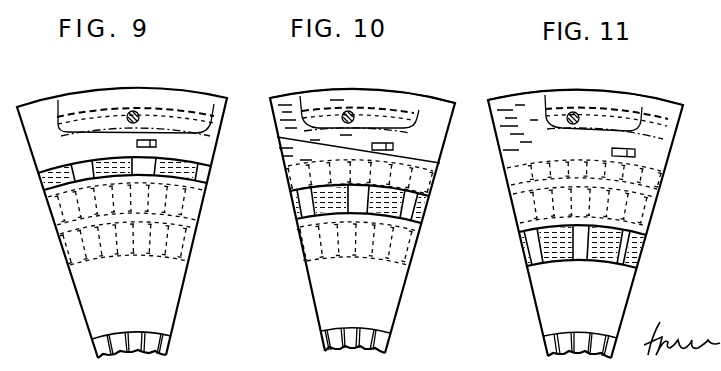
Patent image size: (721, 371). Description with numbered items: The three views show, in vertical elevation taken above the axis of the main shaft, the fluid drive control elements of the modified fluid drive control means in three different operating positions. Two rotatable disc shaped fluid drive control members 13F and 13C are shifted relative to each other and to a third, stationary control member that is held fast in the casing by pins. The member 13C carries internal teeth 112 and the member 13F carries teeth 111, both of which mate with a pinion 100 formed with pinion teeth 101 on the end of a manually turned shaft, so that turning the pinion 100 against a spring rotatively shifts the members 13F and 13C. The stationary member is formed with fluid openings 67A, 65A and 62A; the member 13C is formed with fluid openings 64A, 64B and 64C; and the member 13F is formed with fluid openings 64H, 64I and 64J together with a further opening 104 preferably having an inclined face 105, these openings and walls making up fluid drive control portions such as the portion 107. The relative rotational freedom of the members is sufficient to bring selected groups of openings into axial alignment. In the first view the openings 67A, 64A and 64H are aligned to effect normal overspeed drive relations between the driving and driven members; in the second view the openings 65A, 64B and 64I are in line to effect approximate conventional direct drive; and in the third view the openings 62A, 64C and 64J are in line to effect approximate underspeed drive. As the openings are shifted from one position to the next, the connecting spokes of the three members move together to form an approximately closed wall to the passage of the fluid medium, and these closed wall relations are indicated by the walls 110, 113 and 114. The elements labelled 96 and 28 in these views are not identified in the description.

In FIG. 9, the fluid drive control member 13F is at (162, 320).
In FIG. 10, the fluid drive control member 13F is at (322, 305).
In FIG. 11, the fluid drive control member 13F is at (543, 309).
In FIG. 10, the fluid drive control member 13C is at (375, 82).
In FIG. 11, the fluid drive control member 13C is at (648, 112).
In FIG. 9, the teeth 111 is at (87, 130).
In FIG. 10, the internal teeth 112 is at (310, 107).
In FIG. 11, the pinion 100 is at (578, 110).
In FIG. 10, the pinion teeth 101 is at (350, 110).
In FIG. 10, the opening 104 is at (332, 146).
In FIG. 10, the inclined face 105 is at (463, 169).
In FIG. 10, the closed wall 110 is at (427, 180).
In FIG. 9, the closed wall 113 is at (58, 203).
In FIG. 9, the closed wall 114 is at (67, 243).
In FIG. 10, the slot row 96 is at (378, 340).
In FIG. 11, the fluid drive control portion 107 is at (614, 202).
In FIG. 9, the fluid opening 67A is at (222, 240).
In FIG. 9, the fluid opening 64A is at (186, 190).
In FIG. 9, the fluid opening 64H is at (217, 202).
In FIG. 10, the fluid opening 65A is at (403, 203).
In FIG. 10, the fluid opening 64B is at (399, 222).
In FIG. 10, the fluid opening 64I is at (422, 234).
In FIG. 11, the fluid opening 62A is at (649, 305).
In FIG. 11, the fluid opening 64C is at (622, 257).
In FIG. 11, the fluid opening 64J is at (642, 269).
In FIG. 9, the teeth 28 is at (100, 343).
In FIG. 10, the teeth 28 is at (333, 343).
In FIG. 11, the teeth 28 is at (548, 347).